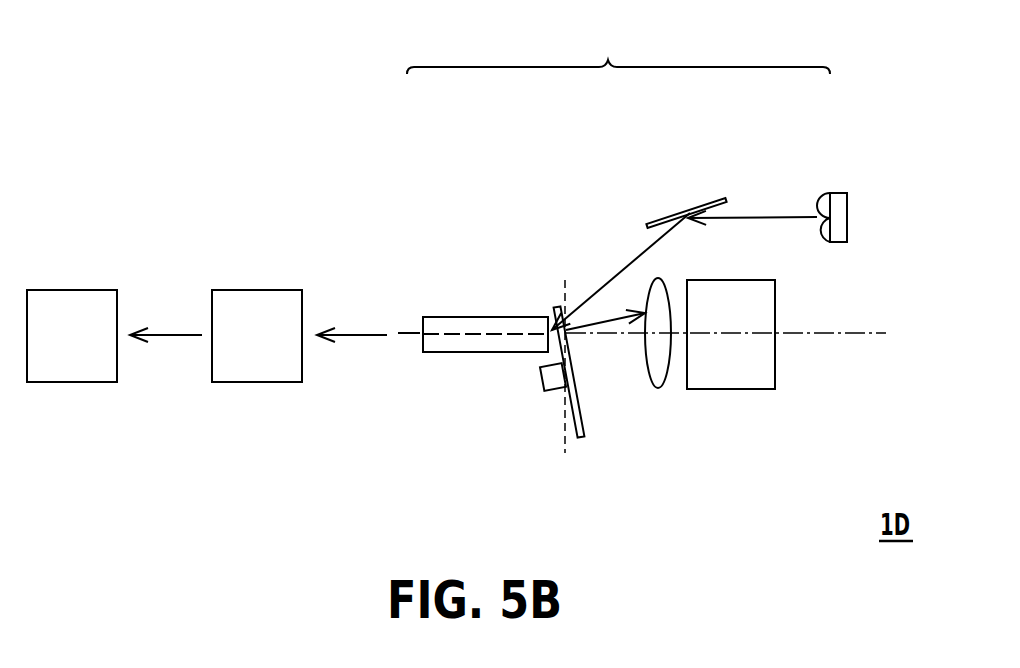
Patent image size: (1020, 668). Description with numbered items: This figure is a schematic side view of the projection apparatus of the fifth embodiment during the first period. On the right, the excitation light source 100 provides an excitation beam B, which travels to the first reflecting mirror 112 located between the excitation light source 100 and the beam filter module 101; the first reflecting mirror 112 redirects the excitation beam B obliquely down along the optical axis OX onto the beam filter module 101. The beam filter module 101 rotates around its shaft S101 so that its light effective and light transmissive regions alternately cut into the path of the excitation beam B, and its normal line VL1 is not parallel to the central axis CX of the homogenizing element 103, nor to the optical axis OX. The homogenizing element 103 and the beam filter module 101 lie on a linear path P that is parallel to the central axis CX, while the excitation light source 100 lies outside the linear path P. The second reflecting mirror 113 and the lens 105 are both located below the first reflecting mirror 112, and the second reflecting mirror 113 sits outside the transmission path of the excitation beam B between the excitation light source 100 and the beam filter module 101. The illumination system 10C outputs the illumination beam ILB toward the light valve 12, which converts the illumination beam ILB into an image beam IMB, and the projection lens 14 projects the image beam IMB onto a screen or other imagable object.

The illumination system 10C is at (618, 48).
The projection lens 14 is at (85, 349).
The light valve 12 is at (277, 349).
The image beam IMB is at (177, 335).
The illumination beam ILB is at (360, 335).
The central axis CX is at (408, 333).
The homogenizing element 103 is at (487, 318).
The beam filter module 101 is at (581, 439).
The shaft S101 is at (541, 382).
The optical axis OX is at (615, 278).
The normal line VL1 is at (612, 320).
The lens 105 is at (657, 388).
The second reflecting mirror 113 is at (727, 389).
The linear path P is at (880, 333).
The first reflecting mirror 112 is at (663, 220).
The excitation beam B is at (780, 215).
The excitation light source 100 is at (841, 193).